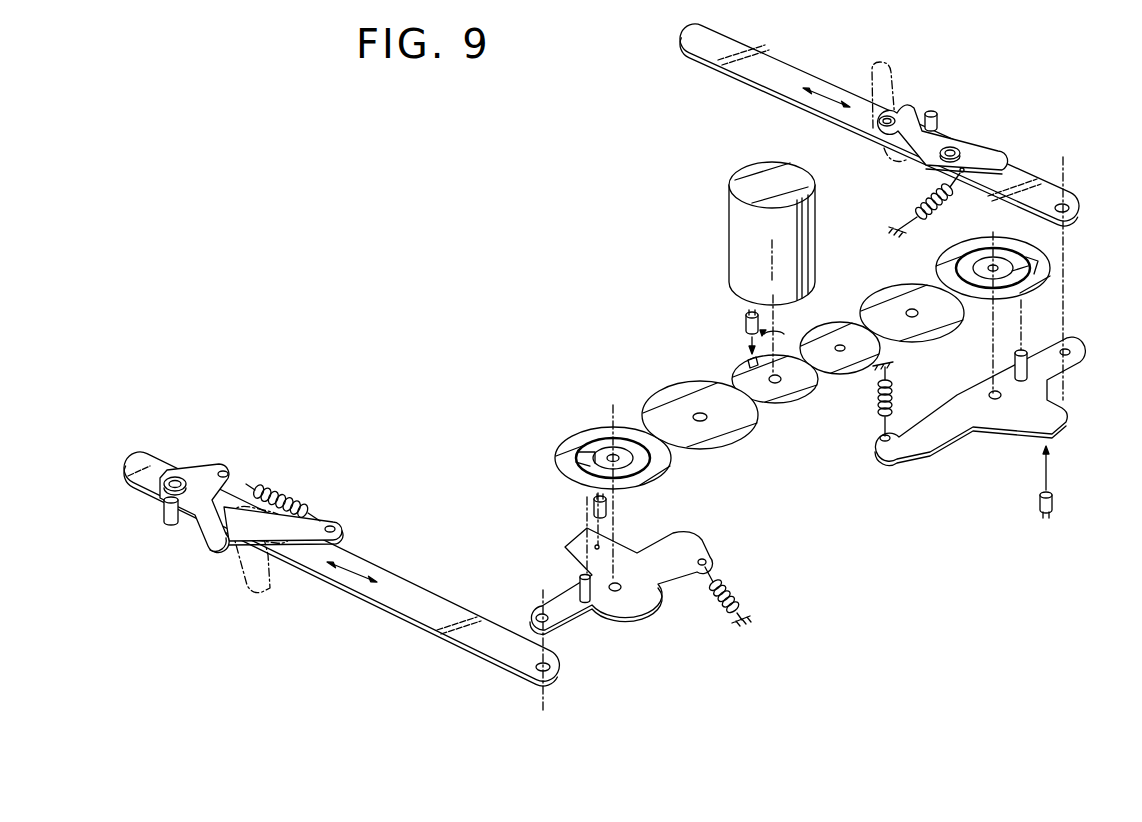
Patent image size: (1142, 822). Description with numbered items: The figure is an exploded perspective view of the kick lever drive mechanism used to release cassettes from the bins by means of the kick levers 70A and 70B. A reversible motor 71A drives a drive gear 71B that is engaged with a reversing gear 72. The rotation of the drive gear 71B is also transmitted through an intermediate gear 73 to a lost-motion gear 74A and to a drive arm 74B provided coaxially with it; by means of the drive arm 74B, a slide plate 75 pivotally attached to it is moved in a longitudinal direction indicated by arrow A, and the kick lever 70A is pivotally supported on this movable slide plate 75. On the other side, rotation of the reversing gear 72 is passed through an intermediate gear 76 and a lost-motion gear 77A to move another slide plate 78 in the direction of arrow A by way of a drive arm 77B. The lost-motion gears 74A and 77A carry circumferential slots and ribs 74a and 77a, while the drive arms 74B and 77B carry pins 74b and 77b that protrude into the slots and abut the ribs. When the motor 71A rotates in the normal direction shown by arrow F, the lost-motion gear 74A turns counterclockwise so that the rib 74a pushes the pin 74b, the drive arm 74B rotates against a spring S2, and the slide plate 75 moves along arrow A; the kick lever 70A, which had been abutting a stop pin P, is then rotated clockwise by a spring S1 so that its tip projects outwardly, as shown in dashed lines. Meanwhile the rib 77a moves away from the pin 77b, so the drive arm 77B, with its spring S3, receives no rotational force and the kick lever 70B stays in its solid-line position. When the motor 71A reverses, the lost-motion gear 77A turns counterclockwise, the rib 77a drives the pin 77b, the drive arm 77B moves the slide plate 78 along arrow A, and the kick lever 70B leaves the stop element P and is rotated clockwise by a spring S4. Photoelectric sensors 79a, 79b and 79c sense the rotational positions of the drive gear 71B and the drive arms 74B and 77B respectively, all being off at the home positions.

The kick lever 70A is at (211, 541).
The kick lever 70B is at (886, 78).
The stop pin P is at (940, 121).
The slide plate 78 is at (1016, 172).
The spring S4 is at (917, 200).
The reversible motor 71A is at (735, 217).
The lost-motion gear 77A is at (960, 250).
The rib 77a is at (1050, 268).
The intermediate gear 76 is at (872, 306).
The photoelectric sensor 79a is at (743, 328).
The arrow F is at (766, 343).
The intermediate gear 73 is at (678, 388).
The reversing gear 72 is at (850, 373).
The drive gear 71B is at (797, 401).
The lost-motion gear 74A is at (600, 428).
The rib 74a is at (580, 455).
The spring S3 is at (875, 405).
The pin 77b is at (1030, 372).
The drive arm 77B is at (1003, 418).
The photoelectric sensor 79b is at (612, 508).
The pin 74b is at (580, 582).
The photoelectric sensor 79c is at (1056, 503).
The spring S2 is at (736, 588).
The drive arm 74B is at (660, 600).
The spring S1 is at (291, 490).
The arrow A is at (361, 582).
The slide plate 75 is at (492, 656).